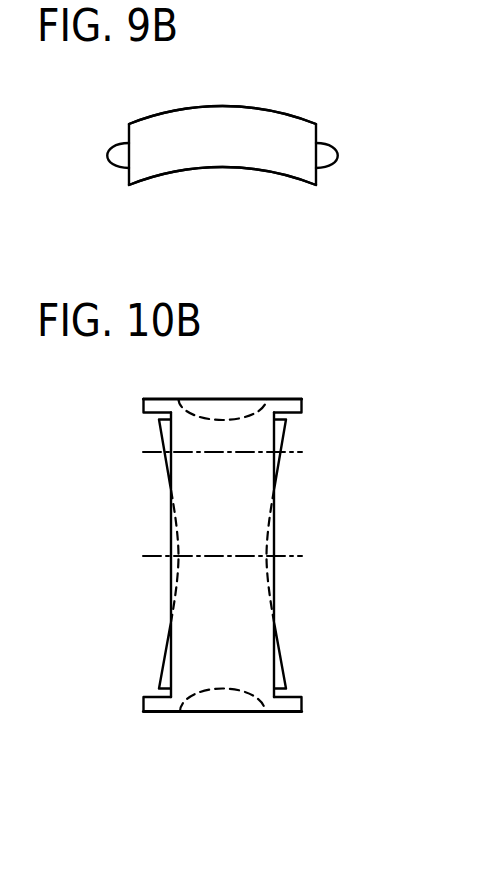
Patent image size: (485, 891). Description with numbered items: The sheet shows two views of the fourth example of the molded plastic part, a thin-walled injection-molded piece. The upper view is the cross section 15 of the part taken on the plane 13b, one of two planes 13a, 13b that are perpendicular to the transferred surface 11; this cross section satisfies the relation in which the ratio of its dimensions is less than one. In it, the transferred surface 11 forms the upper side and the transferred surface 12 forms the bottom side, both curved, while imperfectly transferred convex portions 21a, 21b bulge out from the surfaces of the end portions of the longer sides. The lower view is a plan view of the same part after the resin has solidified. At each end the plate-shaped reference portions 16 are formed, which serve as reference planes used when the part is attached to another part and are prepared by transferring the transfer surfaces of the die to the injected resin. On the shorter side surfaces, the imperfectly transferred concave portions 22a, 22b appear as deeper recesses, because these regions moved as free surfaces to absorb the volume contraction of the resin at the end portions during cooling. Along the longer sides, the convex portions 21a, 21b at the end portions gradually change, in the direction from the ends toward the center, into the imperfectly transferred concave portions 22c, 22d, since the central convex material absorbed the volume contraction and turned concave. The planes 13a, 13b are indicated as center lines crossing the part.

In FIG. 9B, the transferred surface 11 is at (212, 104).
In FIG. 9B, the transferred surface 12 is at (212, 167).
In FIG. 9B, the cross section 15 is at (275, 118).
In FIG. 9B, the imperfectly transferred convex portion 21a is at (334, 147).
In FIG. 10B, the imperfectly transferred convex portion 21a is at (286, 436).
In FIG. 9B, the imperfectly transferred convex portion 21b is at (111, 147).
In FIG. 10B, the imperfectly transferred convex portion 21b is at (159, 436).
In FIG. 10B, the plate-shaped reference portion 16 is at (143, 405).
In FIG. 10B, the imperfectly transferred concave portion 22a is at (233, 693).
In FIG. 10B, the imperfectly transferred concave portion 22b is at (237, 418).
In FIG. 10B, the imperfectly transferred concave portion 22c is at (269, 536).
In FIG. 10B, the imperfectly transferred concave portion 22d is at (176, 536).
In FIG. 10B, the plane 13a is at (152, 557).
In FIG. 10B, the plane 13b is at (152, 453).